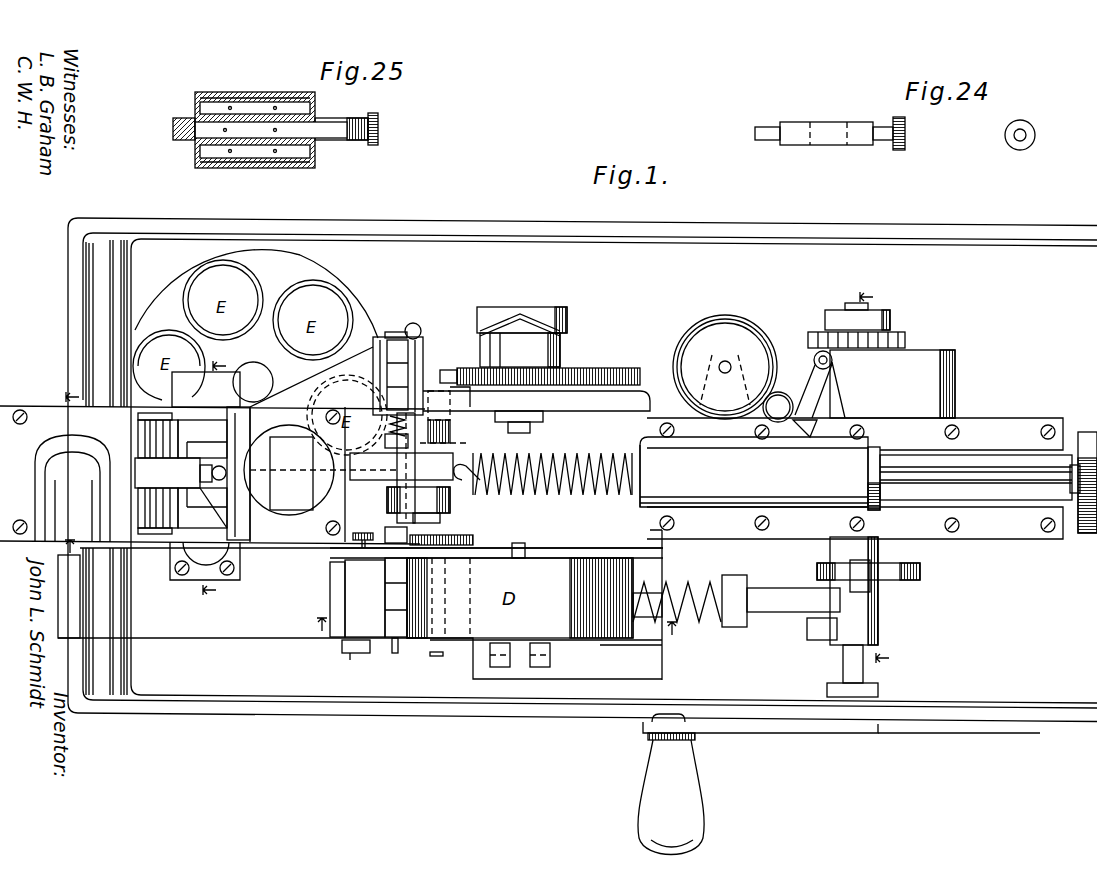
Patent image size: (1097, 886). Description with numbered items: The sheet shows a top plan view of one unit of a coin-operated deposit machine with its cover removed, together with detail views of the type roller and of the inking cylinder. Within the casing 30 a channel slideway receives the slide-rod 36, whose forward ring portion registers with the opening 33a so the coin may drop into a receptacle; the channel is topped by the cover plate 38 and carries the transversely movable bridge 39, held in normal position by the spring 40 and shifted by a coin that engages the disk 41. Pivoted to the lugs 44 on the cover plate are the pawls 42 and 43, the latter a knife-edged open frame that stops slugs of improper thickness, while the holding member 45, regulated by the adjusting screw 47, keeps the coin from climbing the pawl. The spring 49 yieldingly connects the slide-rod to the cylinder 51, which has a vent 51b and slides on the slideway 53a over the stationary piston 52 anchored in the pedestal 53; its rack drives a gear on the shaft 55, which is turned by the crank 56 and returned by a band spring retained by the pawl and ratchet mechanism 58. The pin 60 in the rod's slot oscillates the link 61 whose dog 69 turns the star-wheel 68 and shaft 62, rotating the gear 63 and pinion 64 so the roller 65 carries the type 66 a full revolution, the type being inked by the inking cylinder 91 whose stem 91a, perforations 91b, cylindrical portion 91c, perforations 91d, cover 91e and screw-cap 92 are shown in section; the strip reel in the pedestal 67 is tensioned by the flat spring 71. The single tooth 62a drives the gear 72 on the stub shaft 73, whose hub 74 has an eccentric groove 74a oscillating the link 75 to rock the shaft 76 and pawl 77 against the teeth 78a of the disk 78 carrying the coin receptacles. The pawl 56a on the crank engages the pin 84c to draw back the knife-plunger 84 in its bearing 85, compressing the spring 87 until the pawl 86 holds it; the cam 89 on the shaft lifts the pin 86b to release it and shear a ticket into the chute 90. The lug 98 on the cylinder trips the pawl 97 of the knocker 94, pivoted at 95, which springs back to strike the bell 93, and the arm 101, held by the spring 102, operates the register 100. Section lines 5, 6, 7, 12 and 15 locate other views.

In FIG. 1, the section line 5- 5 is at (882, 471).
In FIG. 1, the section line 6-6 / side plate 6 is at (69, 508).
In FIG. 1, the section line 7- 7 is at (214, 478).
In FIG. 1, the bracket arm 12 is at (239, 510).
In FIG. 1, the section line 15- 15 is at (496, 634).
In FIG. 1, the casing 30 is at (1040, 703).
In FIG. 1, the opening 33a is at (322, 470).
In FIG. 1, the slide-rod 36 is at (466, 485).
In FIG. 1, the cover plate 38 is at (57, 488).
In FIG. 1, the bridge 39 is at (230, 576).
In FIG. 1, the spring 40 is at (172, 395).
In FIG. 1, the disk 41 is at (200, 568).
In FIG. 1, the pawl 42 is at (177, 473).
In FIG. 1, the pawl 43 is at (230, 432).
In FIG. 1, the lugs 44 is at (247, 405).
In FIG. 1, the holding member 45 is at (180, 418).
In FIG. 1, the adjusting screw 47 is at (227, 472).
In FIG. 1, the spring 49 is at (535, 495).
In FIG. 1, the cylinder 51 is at (754, 472).
In FIG. 1, the port or vent 51b is at (666, 471).
In FIG. 1, the piston 52 is at (880, 492).
In FIG. 1, the supporting pedestal or frame 53 is at (1086, 533).
In FIG. 1, the slideway 53a is at (975, 445).
In FIG. 1, the shaft 55 is at (638, 506).
In FIG. 1, the operating crank 56 is at (743, 733).
In FIG. 1, the pawl 56a is at (806, 628).
In FIG. 1, the pawl and ratchet mechanism 58 is at (906, 341).
In FIG. 1, the pin 60 is at (460, 446).
In FIG. 1, the link 61 is at (416, 468).
In FIG. 1, the shaft 62 is at (437, 656).
In FIG. 1, the single tooth 62a is at (448, 370).
In FIG. 1, the gear 63 is at (476, 539).
In FIG. 1, the pinion 64 is at (378, 533).
In FIG. 24, the pinion 64 is at (900, 150).
In FIG. 1, the roller 65 is at (398, 652).
In FIG. 24, the roller 65 is at (766, 126).
In FIG. 1, the type 66 is at (392, 640).
In FIG. 24, the type 66 is at (858, 122).
In FIG. 1, the pedestal or bracket 67 is at (610, 411).
In FIG. 1, the star-wheel or four-toothed ratchet 68 is at (457, 541).
In FIG. 1, the dog 69 is at (455, 548).
In FIG. 1, the flat spring 71 is at (497, 668).
In FIG. 1, the gear 72 is at (613, 369).
In FIG. 1, the stub shaft 73 is at (532, 427).
In FIG. 1, the hub portion 74 is at (562, 353).
In FIG. 1, the eccentric groove 74a is at (540, 312).
In FIG. 1, the link 75 is at (467, 320).
In FIG. 1, the shaft 76 is at (415, 325).
In FIG. 1, the pawl 77 is at (395, 338).
In FIG. 1, the disk 78 is at (300, 277).
In FIG. 1, the protrusions or teeth 78a is at (350, 276).
In FIG. 1, the knife-plunger 84 is at (690, 590).
In FIG. 1, the pin 84c is at (840, 650).
In FIG. 1, the bearing 85 is at (738, 577).
In FIG. 1, the pawl 86 is at (778, 597).
In FIG. 1, the pin 86b is at (880, 543).
In FIG. 1, the spring 87 is at (693, 615).
In FIG. 1, the cam 89 is at (905, 592).
In FIG. 1, the chute 90 is at (200, 638).
In FIG. 1, the inking cylinder 91 is at (350, 597).
In FIG. 25, the inking cylinder 91 is at (281, 128).
In FIG. 25, the hollow shaft or stem portion 91a is at (195, 124).
In FIG. 25, the perforations 91b is at (200, 140).
In FIG. 25, the cylindrical portion 91c is at (272, 180).
In FIG. 25, the perforations 91d is at (215, 98).
In FIG. 25, the cover 91e is at (232, 162).
In FIG. 25, the screw-cap 92 is at (380, 128).
In FIG. 1, the bell 93 is at (727, 322).
In FIG. 1, the knocker 94 is at (790, 394).
In FIG. 1, the pivot 95 is at (834, 362).
In FIG. 1, the pawl 97 is at (811, 434).
In FIG. 1, the lug 98 is at (676, 431).
In FIG. 1, the register 100 is at (398, 337).
In FIG. 1, the arm 101 is at (401, 488).
In FIG. 1, the spring 102 is at (452, 432).